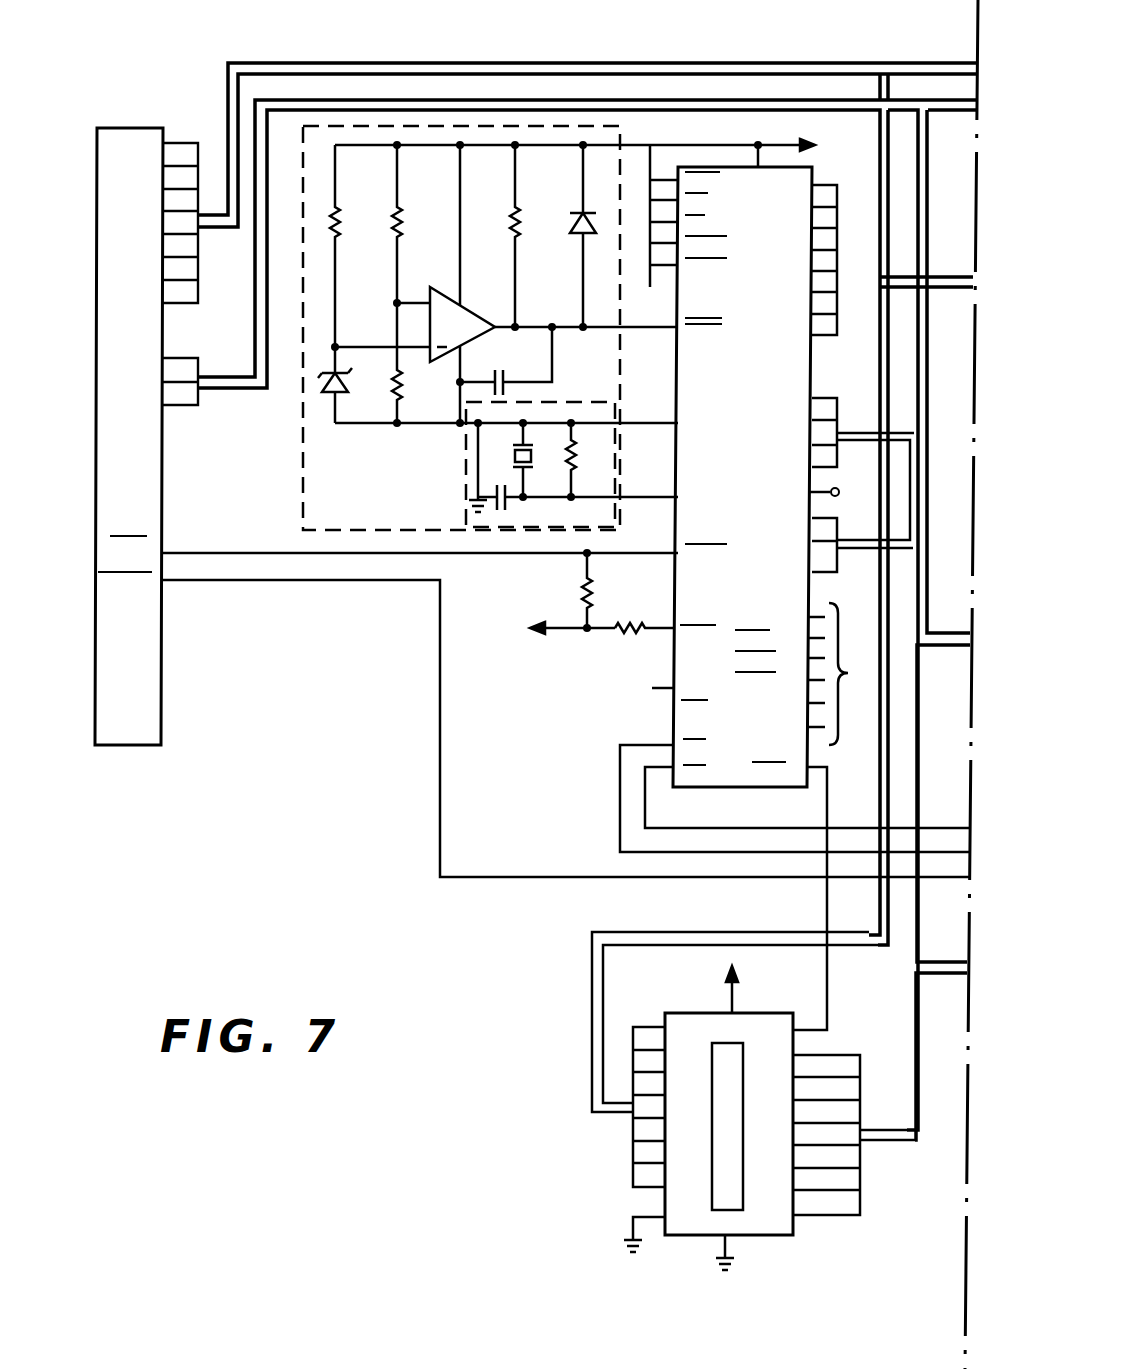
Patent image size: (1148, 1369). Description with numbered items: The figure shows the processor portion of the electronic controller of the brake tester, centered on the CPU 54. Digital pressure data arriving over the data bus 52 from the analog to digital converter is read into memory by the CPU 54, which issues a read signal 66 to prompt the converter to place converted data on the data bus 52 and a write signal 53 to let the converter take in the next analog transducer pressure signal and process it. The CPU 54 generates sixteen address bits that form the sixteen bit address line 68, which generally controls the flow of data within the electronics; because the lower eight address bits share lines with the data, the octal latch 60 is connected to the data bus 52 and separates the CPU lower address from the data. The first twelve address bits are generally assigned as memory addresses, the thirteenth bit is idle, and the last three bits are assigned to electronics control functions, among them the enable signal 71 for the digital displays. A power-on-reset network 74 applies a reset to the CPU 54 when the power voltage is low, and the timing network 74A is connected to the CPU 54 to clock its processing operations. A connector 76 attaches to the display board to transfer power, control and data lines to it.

The data bus 52 is at (826, 63).
The write signal 53 is at (645, 783).
The CPU 54 is at (700, 167).
The octal latch 60 is at (757, 1236).
The read signal 66 is at (620, 815).
The sixteen bit address line 68 is at (927, 100).
The enable signal 71 is at (492, 878).
The power-on-reset network 74 is at (345, 128).
The timing network 74A is at (466, 483).
The connector 76 is at (153, 128).